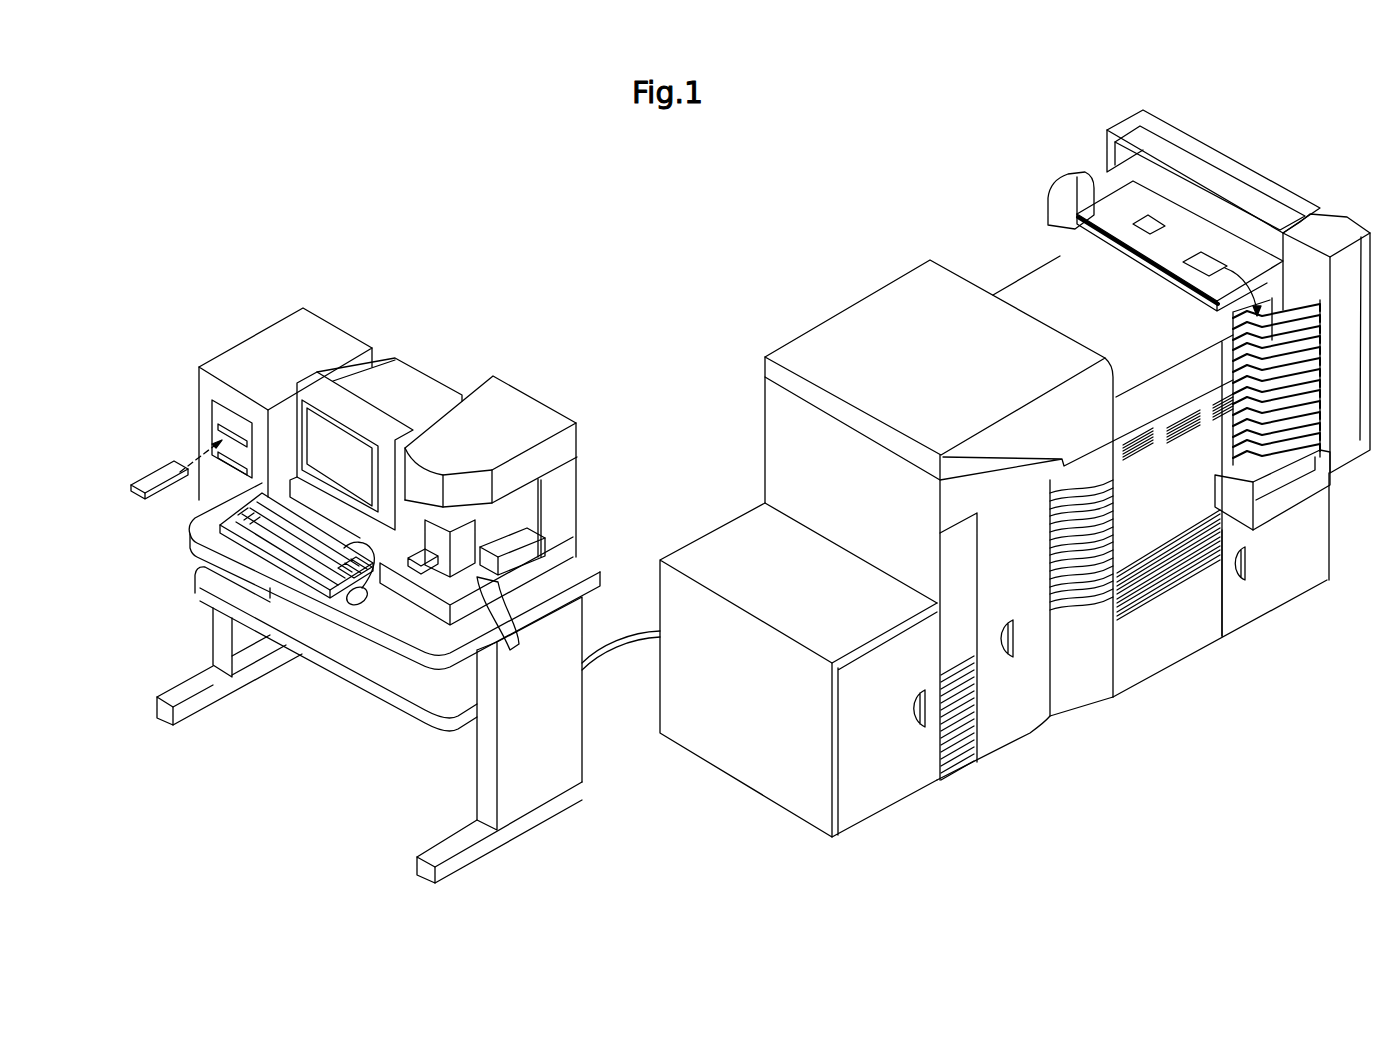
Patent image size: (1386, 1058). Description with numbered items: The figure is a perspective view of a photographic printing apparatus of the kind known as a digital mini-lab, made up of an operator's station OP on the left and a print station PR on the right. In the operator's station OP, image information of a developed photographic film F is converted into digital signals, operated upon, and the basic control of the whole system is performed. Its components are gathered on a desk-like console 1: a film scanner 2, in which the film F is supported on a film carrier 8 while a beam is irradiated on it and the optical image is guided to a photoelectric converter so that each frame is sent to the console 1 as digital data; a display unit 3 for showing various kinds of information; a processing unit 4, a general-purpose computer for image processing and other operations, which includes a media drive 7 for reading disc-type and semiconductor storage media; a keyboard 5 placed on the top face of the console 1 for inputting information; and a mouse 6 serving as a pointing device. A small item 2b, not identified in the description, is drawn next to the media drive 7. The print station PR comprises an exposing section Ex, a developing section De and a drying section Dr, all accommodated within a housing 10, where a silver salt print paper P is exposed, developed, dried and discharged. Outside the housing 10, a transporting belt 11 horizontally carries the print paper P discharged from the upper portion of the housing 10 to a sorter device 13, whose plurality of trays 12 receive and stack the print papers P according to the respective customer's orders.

The desk-like console 1 is at (207, 524).
The film scanner 2 is at (513, 410).
The memory card 2b is at (143, 490).
The display unit 3 is at (402, 372).
The processing unit 4 is at (265, 350).
The keyboard 5 is at (300, 574).
The mouse 6 is at (352, 604).
The media drive 7 is at (213, 426).
The film carrier 8 is at (527, 550).
The housing 10 is at (1052, 272).
The transporting belt 11 is at (1125, 207).
The trays 12 is at (1237, 353).
The sorter device 13 is at (1337, 207).
The film F is at (513, 636).
The print paper P is at (1203, 250).
The operator's station OP is at (471, 350).
The print station PR is at (832, 267).
The exposing section Ex is at (1033, 737).
The developing section De is at (1163, 680).
The drying section Dr is at (1298, 605).